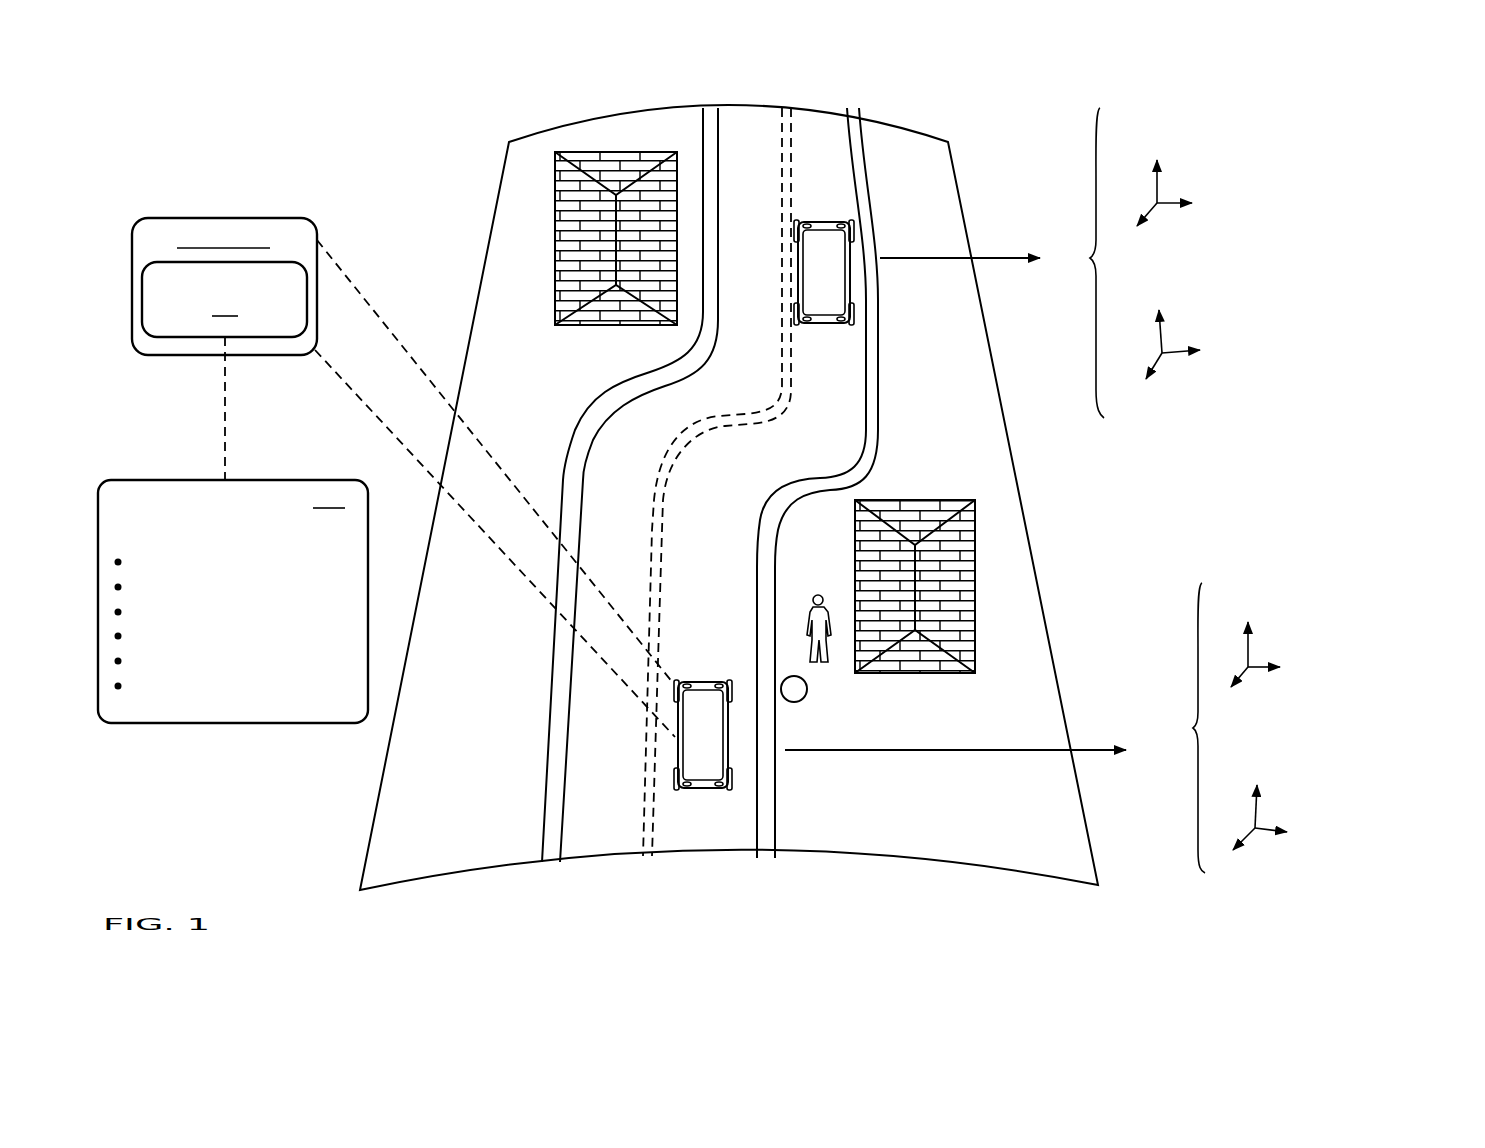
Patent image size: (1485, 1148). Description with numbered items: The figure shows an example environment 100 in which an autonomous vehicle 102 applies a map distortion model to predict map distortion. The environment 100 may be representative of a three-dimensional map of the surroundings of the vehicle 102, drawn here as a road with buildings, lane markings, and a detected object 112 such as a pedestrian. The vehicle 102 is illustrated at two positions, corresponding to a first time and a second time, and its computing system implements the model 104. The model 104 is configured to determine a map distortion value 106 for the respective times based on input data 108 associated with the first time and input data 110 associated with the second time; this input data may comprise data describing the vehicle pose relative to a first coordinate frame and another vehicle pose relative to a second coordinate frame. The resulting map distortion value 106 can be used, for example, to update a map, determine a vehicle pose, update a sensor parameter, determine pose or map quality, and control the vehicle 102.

The environment 100 is at (190, 113).
The vehicle 102 is at (832, 218).
The model 104 is at (224, 299).
The map distortion value 106 is at (233, 530).
The input data at time t1 108 is at (1129, 728).
The input data at time t2 110 is at (1145, 263).
The object 112 is at (826, 690).